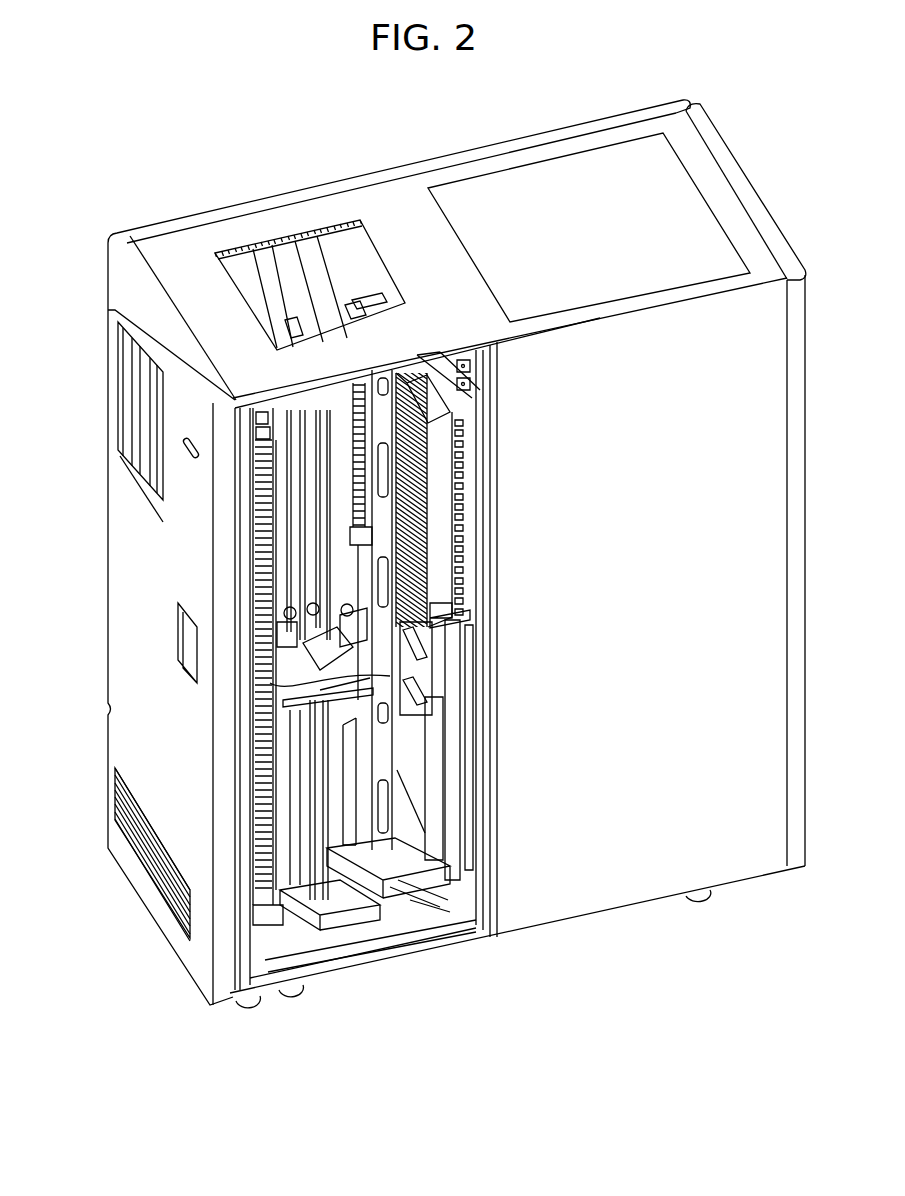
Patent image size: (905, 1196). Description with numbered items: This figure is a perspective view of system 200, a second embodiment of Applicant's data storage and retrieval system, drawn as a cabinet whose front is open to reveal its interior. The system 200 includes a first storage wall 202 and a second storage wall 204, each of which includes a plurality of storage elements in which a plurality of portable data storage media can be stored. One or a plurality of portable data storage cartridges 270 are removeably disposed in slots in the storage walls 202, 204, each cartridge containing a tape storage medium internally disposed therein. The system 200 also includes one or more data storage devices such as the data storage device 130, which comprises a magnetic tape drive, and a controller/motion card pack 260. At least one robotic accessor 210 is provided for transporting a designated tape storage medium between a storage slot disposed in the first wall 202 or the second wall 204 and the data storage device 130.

The system 200 is at (660, 913).
The first storage wall 202 is at (437, 458).
The second storage wall 204 is at (247, 533).
The robotic accessor 210 is at (253, 679).
The data storage device 130 is at (442, 697).
The controller/motion card pack 260 is at (433, 723).
The portable data storage cartridges 270 is at (457, 613).